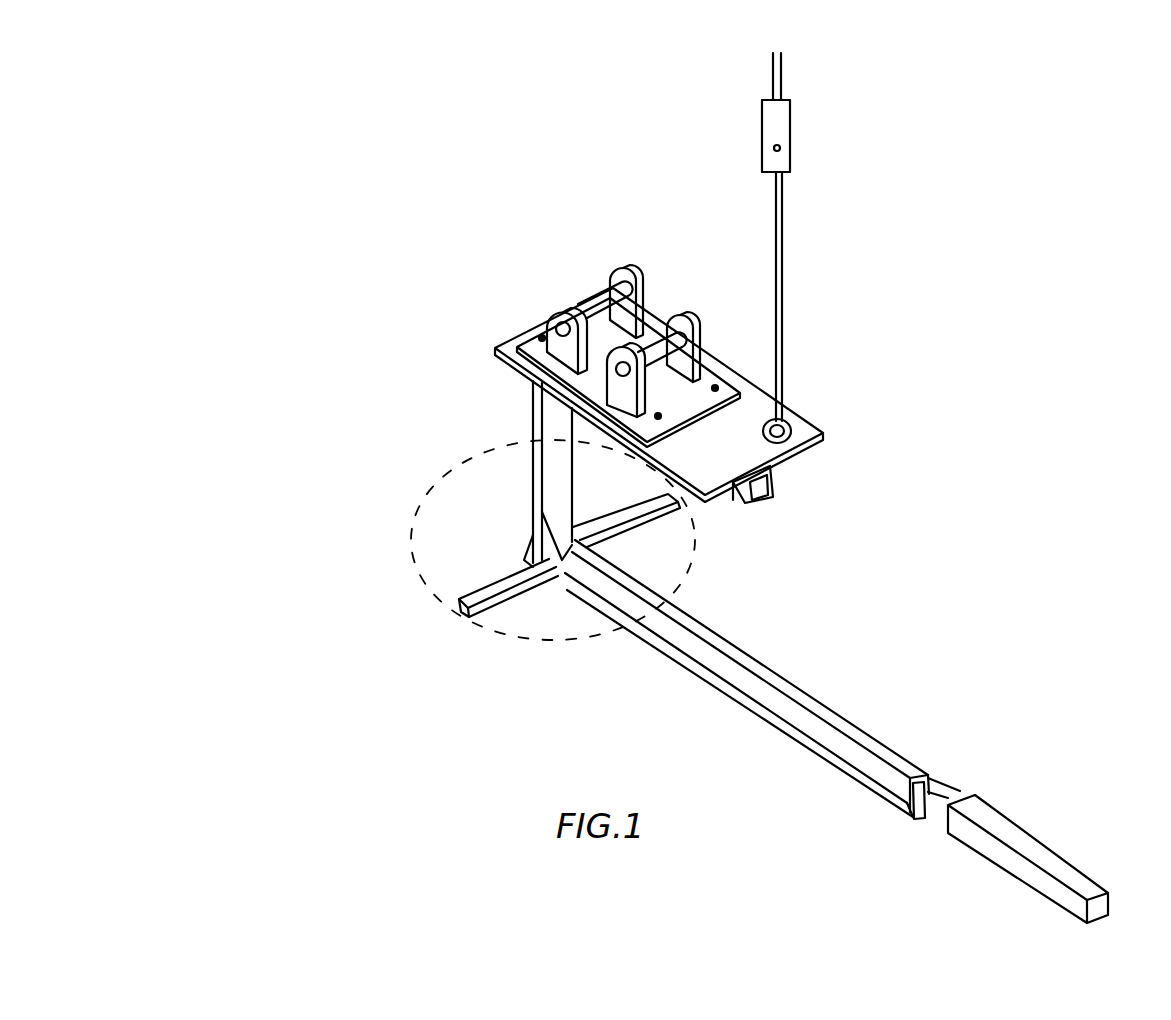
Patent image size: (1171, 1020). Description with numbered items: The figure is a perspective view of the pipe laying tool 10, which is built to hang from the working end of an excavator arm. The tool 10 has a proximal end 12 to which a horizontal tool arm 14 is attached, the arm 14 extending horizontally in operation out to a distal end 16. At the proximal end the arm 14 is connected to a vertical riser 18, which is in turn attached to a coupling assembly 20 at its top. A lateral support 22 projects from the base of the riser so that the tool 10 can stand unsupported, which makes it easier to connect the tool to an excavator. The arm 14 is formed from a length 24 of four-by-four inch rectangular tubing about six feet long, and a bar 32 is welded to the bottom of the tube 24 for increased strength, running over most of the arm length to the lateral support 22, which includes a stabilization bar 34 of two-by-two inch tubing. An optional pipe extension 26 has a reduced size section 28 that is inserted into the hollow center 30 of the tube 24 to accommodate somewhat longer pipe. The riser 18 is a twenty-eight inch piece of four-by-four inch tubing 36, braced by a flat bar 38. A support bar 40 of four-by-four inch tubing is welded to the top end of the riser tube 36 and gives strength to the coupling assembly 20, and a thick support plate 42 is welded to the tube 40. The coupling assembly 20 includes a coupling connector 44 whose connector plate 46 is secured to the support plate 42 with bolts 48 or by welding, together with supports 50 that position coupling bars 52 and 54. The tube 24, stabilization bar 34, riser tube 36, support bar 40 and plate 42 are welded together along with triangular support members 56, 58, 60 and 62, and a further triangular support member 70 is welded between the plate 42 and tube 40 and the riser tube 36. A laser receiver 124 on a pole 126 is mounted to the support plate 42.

The pipe laying tool 10 is at (968, 385).
The proximal end 12 is at (431, 536).
The horizontal tool arm 14 is at (848, 668).
The distal end 16 is at (963, 777).
The vertical riser 18 is at (525, 470).
The coupling assembly 20 is at (580, 255).
The lateral support 22 is at (490, 578).
The length of rectangular tubing 24 is at (727, 638).
The pipe extension 26 is at (1047, 858).
The reduced size section 28 is at (953, 793).
The hollow center 30 is at (907, 807).
The bar 32 is at (780, 727).
The stabilization bar 34 is at (500, 593).
The riser tube 36 is at (557, 462).
The post side face 38 is at (530, 400).
The support bar 40 is at (767, 495).
The support plate 42 is at (810, 427).
The coupling connector 44 is at (710, 338).
The connector plate 46 is at (710, 372).
The bolts 48 is at (715, 390).
The supports 50 is at (545, 318).
The coupling bar 52 is at (593, 305).
The coupling bar 54 is at (652, 360).
The triangular support member 56 is at (532, 555).
The triangular support member 58 is at (587, 530).
The triangular support member 60 is at (613, 543).
The triangular support member 62 is at (564, 565).
The triangular support member 70 is at (733, 500).
The laser receiver 124 is at (792, 112).
The pole 126 is at (783, 220).